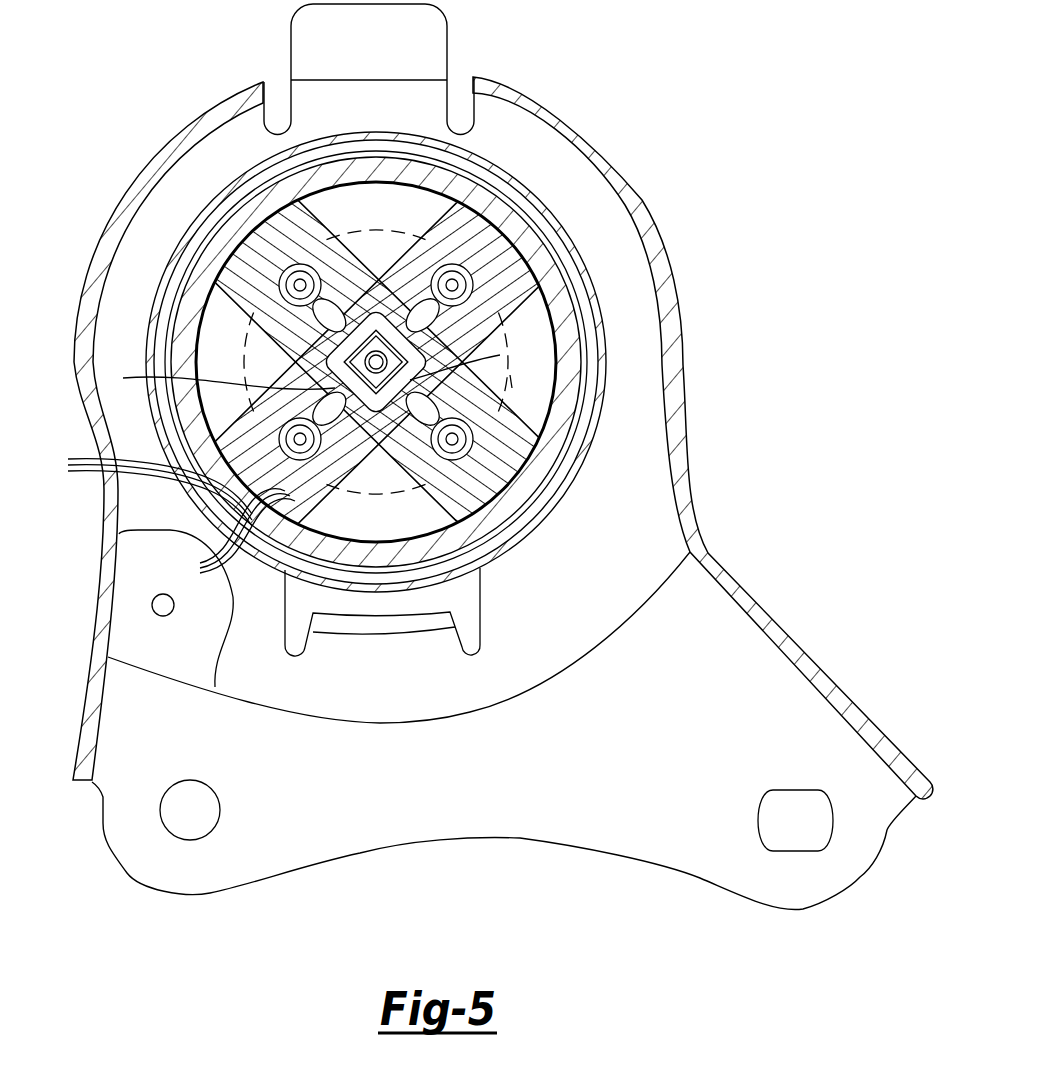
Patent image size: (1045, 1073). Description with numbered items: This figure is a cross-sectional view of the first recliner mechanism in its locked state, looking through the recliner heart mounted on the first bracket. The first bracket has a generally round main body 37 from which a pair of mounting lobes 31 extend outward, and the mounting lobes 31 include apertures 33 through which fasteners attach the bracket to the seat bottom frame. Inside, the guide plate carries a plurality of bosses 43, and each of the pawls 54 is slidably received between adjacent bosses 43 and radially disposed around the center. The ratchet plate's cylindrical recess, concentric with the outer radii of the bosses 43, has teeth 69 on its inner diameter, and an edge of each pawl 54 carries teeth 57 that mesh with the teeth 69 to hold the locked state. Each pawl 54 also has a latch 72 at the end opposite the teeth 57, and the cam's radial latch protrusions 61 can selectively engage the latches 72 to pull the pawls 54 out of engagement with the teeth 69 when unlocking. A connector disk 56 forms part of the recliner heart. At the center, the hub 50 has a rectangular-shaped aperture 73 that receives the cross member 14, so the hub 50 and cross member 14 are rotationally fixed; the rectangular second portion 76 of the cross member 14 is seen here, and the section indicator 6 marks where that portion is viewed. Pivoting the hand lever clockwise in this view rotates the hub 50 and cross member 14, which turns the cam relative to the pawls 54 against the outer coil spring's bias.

The section view indicator 6 is at (447, 247).
The cross member 14 is at (373, 318).
The mounting lobes 31 is at (180, 898).
The apertures 33 is at (197, 822).
The main body 37 is at (680, 405).
The bosses 43 is at (323, 205).
The hub 50 is at (325, 358).
The pawls 54 is at (263, 233).
The connector disk 56 is at (300, 376).
The teeth 57 is at (235, 539).
The latch protrusions 61 is at (470, 400).
The teeth 69 is at (148, 492).
The latch 72 is at (470, 347).
The rectangular-shaped aperture 73 is at (384, 398).
The second portion 76 is at (498, 358).